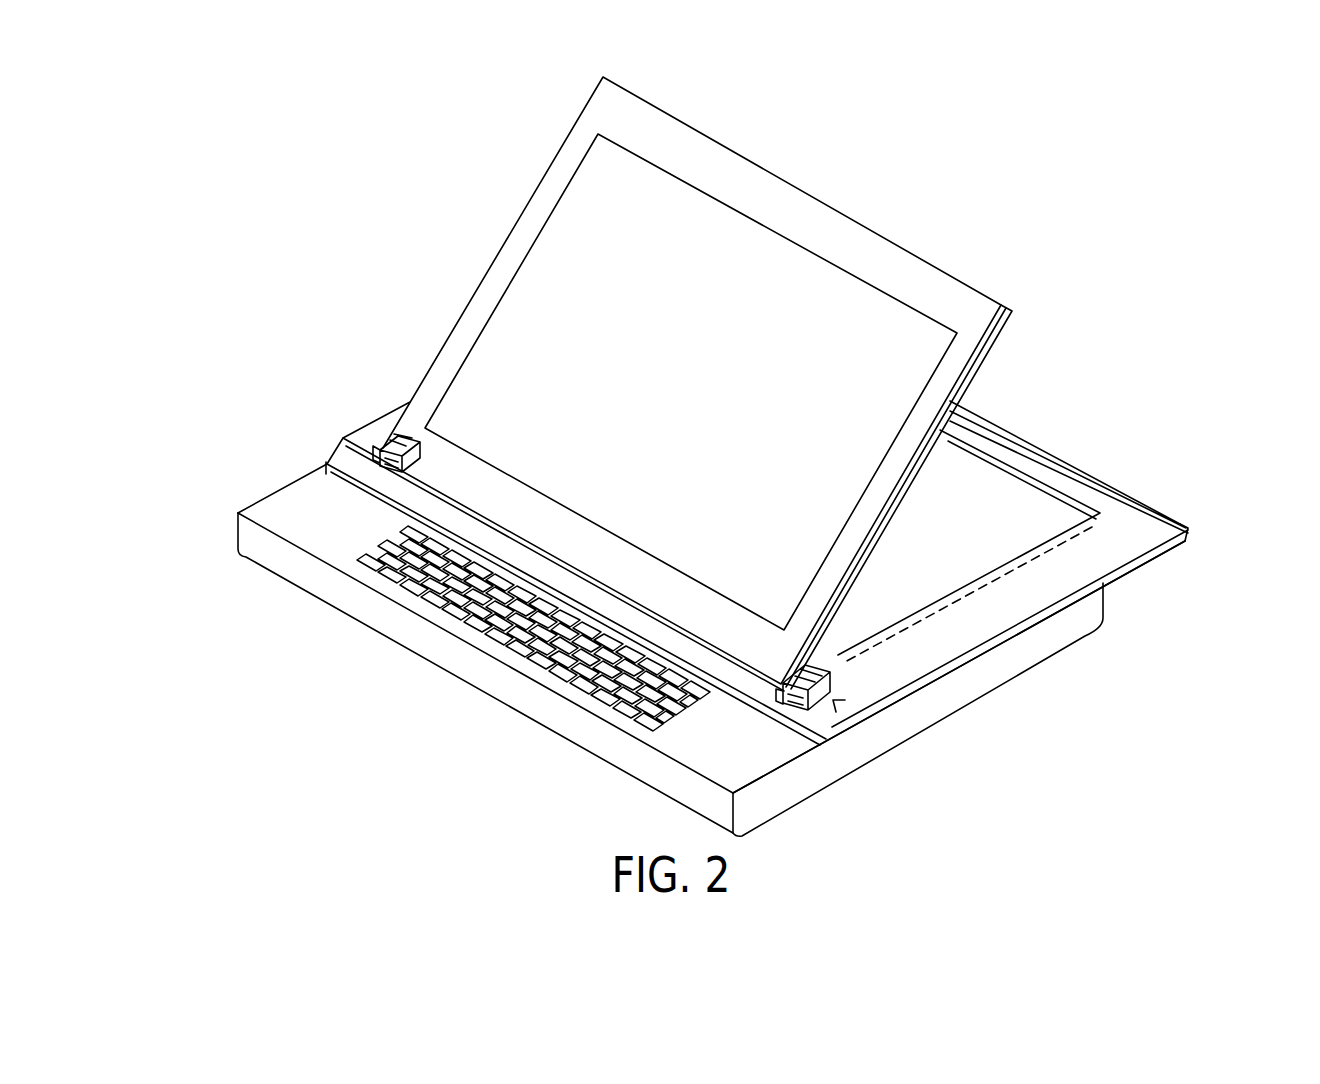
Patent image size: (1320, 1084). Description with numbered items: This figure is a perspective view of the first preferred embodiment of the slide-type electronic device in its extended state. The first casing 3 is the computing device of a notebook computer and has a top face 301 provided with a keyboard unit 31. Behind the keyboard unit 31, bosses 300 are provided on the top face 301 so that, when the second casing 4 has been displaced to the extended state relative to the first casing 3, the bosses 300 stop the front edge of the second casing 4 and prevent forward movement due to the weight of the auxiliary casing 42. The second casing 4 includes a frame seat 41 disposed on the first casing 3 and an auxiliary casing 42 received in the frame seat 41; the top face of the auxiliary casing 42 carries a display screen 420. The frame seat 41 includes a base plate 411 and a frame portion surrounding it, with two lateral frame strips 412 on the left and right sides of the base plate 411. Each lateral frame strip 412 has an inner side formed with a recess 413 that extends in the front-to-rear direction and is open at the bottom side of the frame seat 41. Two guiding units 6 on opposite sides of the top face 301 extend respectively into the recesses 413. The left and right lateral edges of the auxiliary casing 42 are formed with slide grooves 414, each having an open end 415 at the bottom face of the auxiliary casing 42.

The first casing 3 is at (683, 623).
The bosses 300 is at (353, 487).
The top face 301 is at (288, 517).
The keyboard unit 31 is at (398, 580).
The second casing 4 is at (794, 435).
The frame seat 41 is at (794, 569).
The base plate 411 is at (957, 458).
The lateral frame strips 412 is at (381, 420).
The recess 413 is at (915, 685).
The slide grooves 414 is at (1010, 322).
The open end 415 is at (847, 630).
The auxiliary casing 42 is at (715, 384).
The display screen 420 is at (548, 284).
The guiding units 6 is at (833, 700).